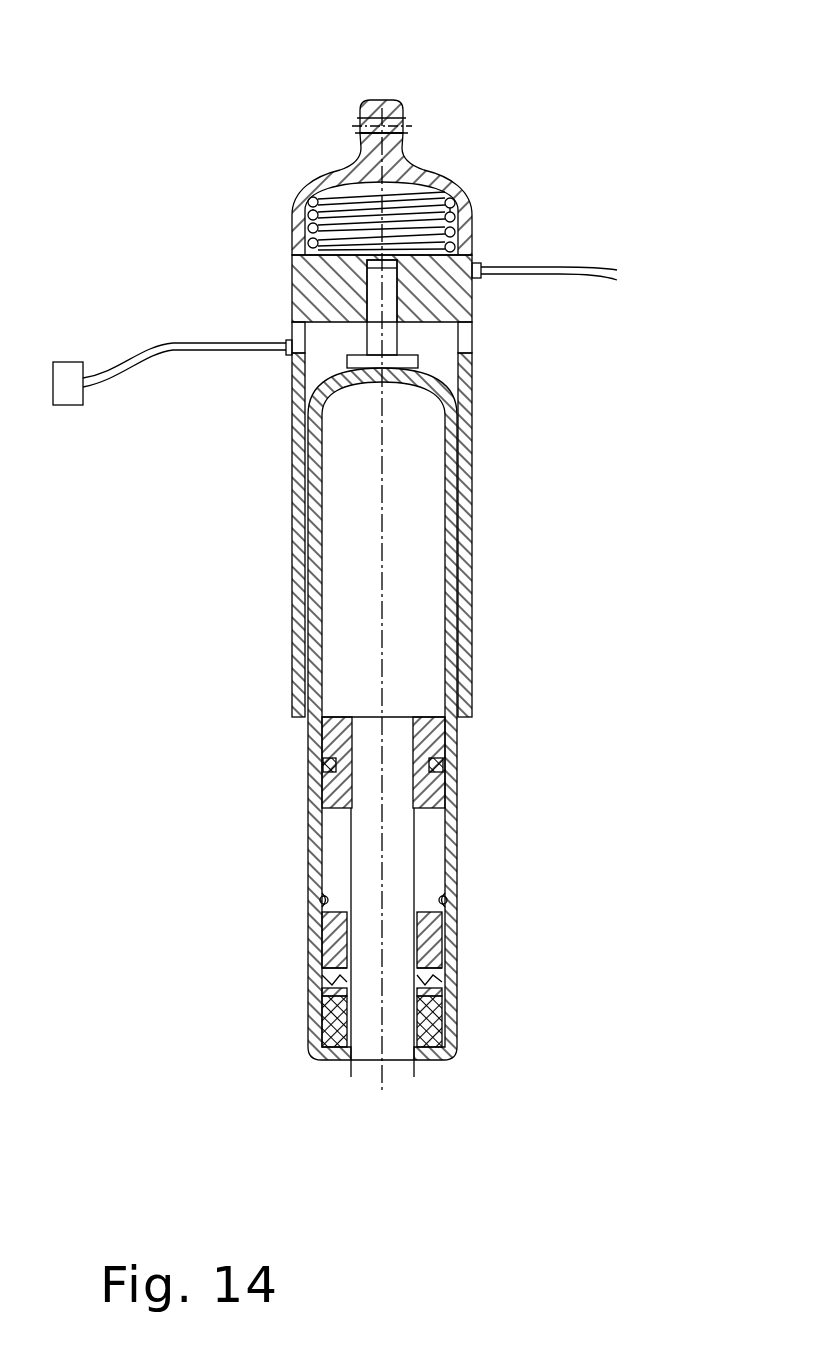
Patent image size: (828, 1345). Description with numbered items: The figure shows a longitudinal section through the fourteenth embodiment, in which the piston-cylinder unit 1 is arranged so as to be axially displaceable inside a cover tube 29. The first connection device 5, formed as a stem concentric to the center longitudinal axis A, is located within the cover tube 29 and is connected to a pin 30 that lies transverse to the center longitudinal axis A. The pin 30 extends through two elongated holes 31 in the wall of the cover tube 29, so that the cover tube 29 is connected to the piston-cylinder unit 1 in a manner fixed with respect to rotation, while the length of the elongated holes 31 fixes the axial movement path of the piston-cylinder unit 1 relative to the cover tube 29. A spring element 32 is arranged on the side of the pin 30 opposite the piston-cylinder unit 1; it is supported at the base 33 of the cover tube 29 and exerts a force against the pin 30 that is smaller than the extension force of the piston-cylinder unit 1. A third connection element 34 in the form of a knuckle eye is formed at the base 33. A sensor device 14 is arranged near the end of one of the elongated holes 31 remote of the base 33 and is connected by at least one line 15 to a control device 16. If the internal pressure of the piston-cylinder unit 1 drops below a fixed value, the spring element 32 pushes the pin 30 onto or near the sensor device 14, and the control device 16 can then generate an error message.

The piston-cylinder unit 1 is at (600, 587).
The first connection device 5 is at (398, 347).
The sensor device 14 is at (288, 353).
The line 15 is at (173, 350).
The control device 16 is at (67, 395).
The cover tube 29 is at (470, 387).
The pin 30 is at (290, 285).
The elongated holes 31 is at (290, 332).
The spring element 32 is at (450, 190).
The base 33 is at (312, 185).
The third connection element 34 is at (400, 100).
The center longitudinal axis A is at (382, 588).